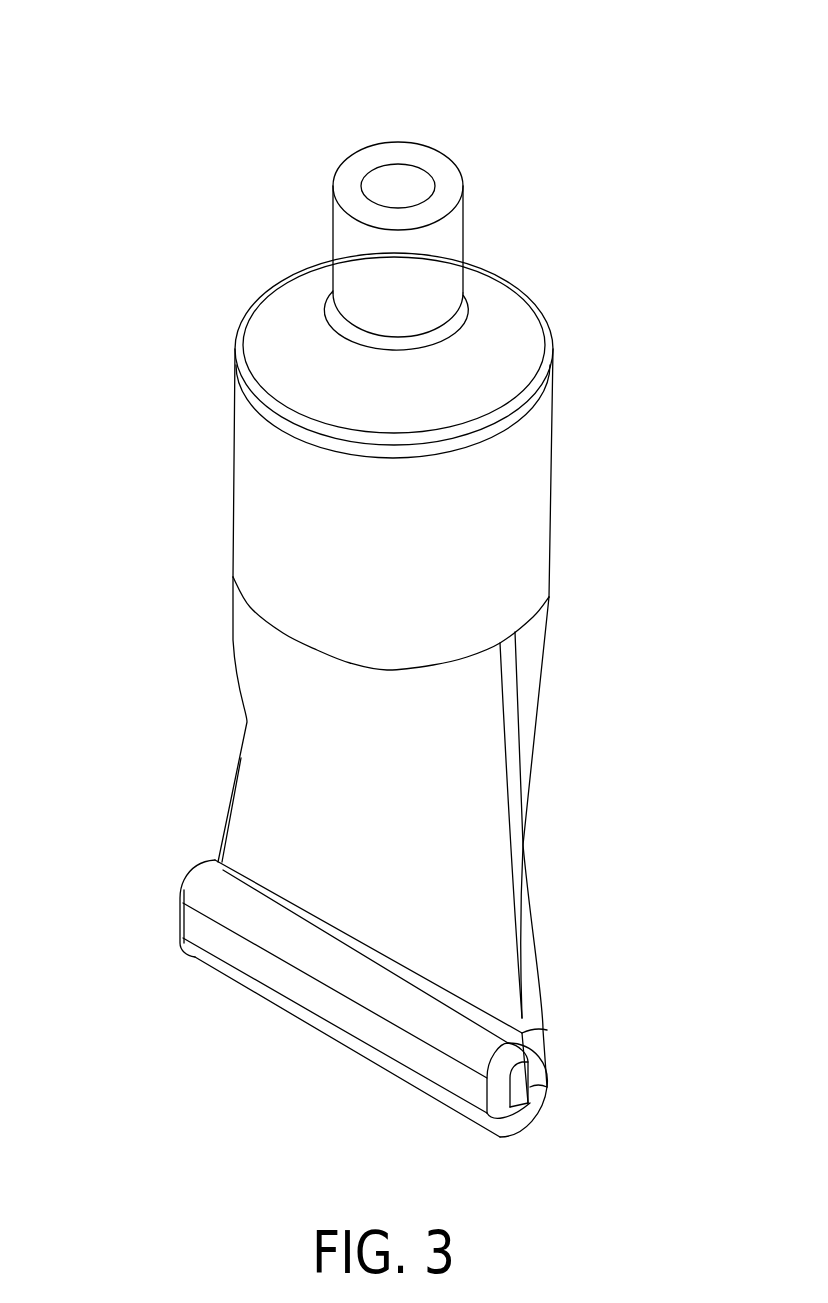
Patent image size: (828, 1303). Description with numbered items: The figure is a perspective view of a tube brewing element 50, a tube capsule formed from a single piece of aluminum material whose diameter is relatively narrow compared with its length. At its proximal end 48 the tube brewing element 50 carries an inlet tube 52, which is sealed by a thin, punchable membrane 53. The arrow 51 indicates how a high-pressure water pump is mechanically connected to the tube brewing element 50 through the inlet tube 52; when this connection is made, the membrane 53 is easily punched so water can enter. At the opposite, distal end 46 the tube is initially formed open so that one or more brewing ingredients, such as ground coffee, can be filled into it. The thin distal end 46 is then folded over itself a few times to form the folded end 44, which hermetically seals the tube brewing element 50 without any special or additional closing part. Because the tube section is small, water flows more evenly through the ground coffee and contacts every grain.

The folded end 44 is at (183, 878).
The distal end 46 is at (238, 767).
The proximal end 48 is at (552, 453).
The tube brewing element 50 is at (153, 325).
The arrow 51 is at (399, 80).
The inlet tube 52 is at (463, 223).
The punchable membrane 53 is at (418, 165).